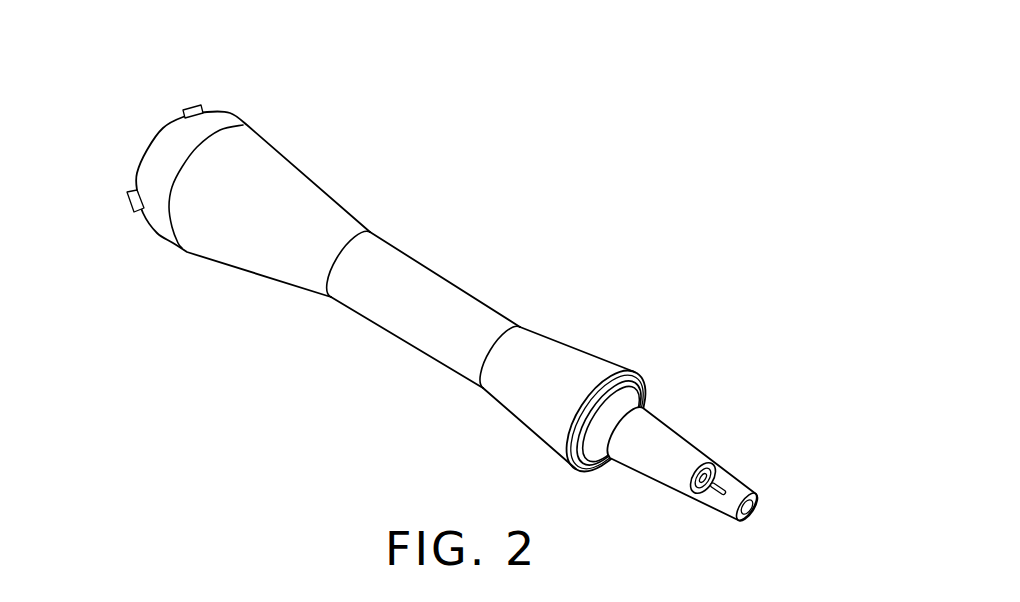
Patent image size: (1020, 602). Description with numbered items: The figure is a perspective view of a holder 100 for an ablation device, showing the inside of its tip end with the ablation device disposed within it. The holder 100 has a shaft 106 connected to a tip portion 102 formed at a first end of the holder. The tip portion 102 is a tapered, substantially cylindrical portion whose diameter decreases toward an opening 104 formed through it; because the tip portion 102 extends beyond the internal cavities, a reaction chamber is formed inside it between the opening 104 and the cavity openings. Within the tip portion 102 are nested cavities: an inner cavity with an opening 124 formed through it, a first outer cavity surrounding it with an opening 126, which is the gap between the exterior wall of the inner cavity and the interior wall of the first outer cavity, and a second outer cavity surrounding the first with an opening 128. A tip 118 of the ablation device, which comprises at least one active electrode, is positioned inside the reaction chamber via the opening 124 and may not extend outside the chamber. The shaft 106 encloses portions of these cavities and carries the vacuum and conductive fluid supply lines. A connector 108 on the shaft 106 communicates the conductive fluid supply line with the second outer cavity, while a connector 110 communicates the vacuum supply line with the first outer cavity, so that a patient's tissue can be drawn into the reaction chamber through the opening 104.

The holder 100 is at (735, 94).
The tip portion 102 is at (670, 422).
The opening 104 is at (757, 500).
The shaft 106 is at (420, 290).
The connector 108 is at (197, 103).
The connector 110 is at (140, 211).
The tip 118 is at (740, 483).
The opening 124 is at (687, 497).
The opening 126 is at (727, 476).
The opening 128 is at (705, 448).